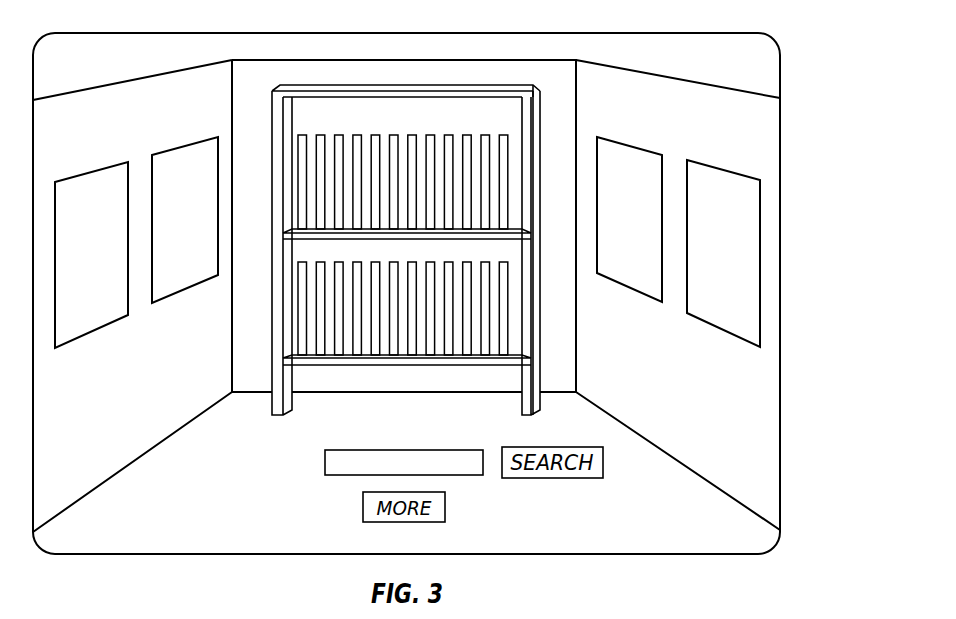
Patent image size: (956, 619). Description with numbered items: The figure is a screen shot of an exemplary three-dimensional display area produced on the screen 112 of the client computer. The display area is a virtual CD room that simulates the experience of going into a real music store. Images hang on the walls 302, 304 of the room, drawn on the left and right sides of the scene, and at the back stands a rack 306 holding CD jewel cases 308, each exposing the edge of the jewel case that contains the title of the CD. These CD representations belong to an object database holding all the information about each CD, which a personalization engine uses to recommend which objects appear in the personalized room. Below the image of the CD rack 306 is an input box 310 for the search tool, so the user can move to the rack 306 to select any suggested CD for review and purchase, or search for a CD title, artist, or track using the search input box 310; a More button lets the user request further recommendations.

The screen 112 is at (782, 79).
The wall 302 is at (632, 157).
The wall 304 is at (187, 157).
The rack 306 is at (540, 125).
The CD jewel cases 308 is at (377, 135).
The input box 310 is at (460, 475).